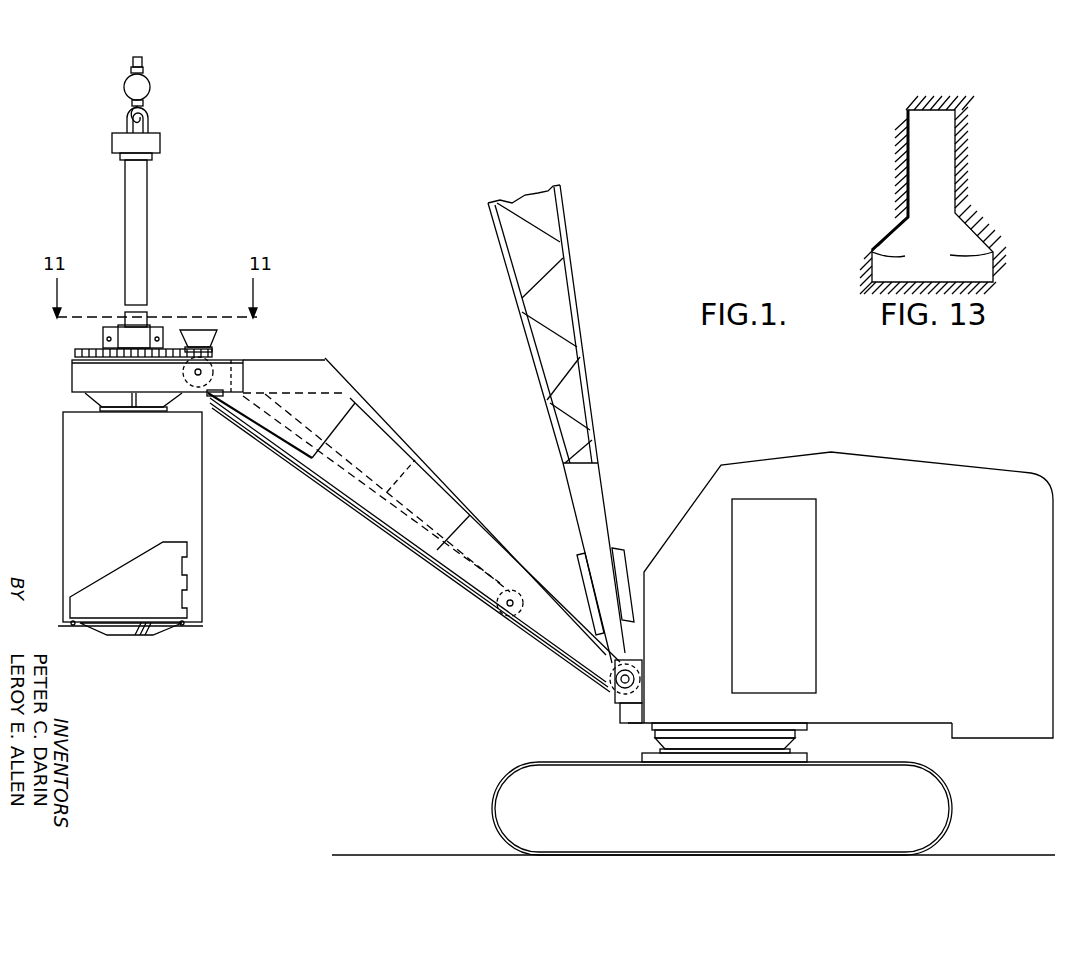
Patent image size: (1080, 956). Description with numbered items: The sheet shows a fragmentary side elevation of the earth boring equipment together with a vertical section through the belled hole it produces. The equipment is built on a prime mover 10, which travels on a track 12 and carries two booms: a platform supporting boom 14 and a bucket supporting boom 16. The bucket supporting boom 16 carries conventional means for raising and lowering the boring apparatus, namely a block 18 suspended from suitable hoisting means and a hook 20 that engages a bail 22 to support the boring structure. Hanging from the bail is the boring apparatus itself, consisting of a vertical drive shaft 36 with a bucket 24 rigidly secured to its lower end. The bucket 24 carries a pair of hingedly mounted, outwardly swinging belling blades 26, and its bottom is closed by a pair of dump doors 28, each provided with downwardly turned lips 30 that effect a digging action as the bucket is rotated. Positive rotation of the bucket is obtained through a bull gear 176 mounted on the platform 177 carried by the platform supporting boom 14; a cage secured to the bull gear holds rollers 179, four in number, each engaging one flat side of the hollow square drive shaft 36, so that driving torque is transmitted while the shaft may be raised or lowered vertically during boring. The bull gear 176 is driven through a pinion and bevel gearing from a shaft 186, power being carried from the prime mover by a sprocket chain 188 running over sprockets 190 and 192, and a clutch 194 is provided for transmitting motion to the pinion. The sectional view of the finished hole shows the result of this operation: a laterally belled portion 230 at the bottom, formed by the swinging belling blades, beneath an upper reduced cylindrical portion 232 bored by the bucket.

In FIG. 1, the prime mover 10 is at (950, 461).
In FIG. 1, the track 12 is at (954, 802).
In FIG. 1, the platform supporting boom 14 is at (457, 577).
In FIG. 1, the bucket supporting boom 16 is at (580, 352).
In FIG. 1, the block 18 is at (147, 85).
In FIG. 1, the hook 20 is at (125, 122).
In FIG. 1, the bail 22 is at (149, 122).
In FIG. 1, the bucket 24 is at (202, 517).
In FIG. 1, the belling blades 26 is at (108, 587).
In FIG. 1, the dump doors 28 is at (161, 628).
In FIG. 1, the downwardly turned lips 30 is at (140, 637).
In FIG. 1, the vertical drive shaft 36 is at (145, 261).
In FIG. 1, the bull gear 176 is at (77, 350).
In FIG. 1, the platform 177 is at (71, 377).
In FIG. 1, the rollers 179 is at (103, 338).
In FIG. 1, the shaft 186 is at (195, 373).
In FIG. 1, the sprocket chain 188 is at (443, 452).
In FIG. 1, the sprocket 190 is at (228, 362).
In FIG. 1, the sprocket 192 is at (502, 618).
In FIG. 1, the clutch 194 is at (195, 328).
In FIG. 13, the laterally belled portion 230 is at (932, 252).
In FIG. 13, the upper reduced cylindrical portion 232 is at (962, 160).